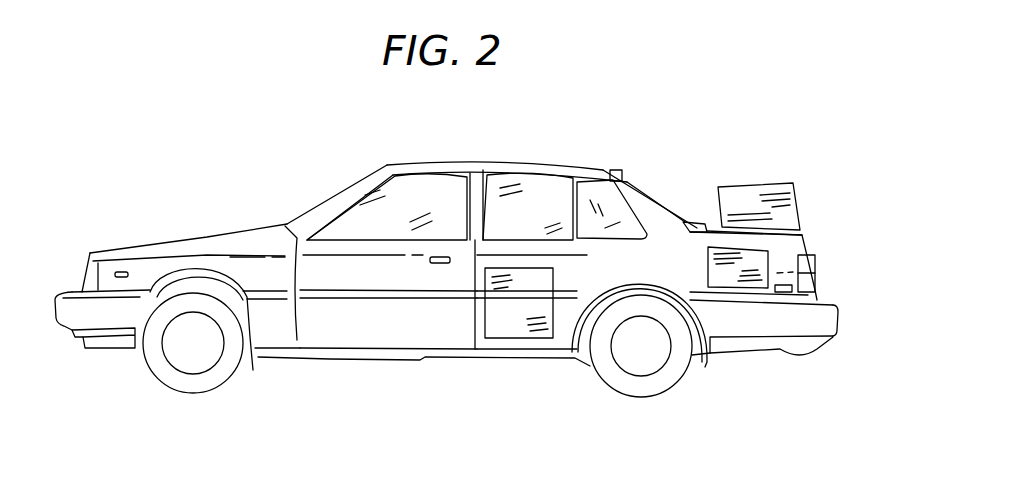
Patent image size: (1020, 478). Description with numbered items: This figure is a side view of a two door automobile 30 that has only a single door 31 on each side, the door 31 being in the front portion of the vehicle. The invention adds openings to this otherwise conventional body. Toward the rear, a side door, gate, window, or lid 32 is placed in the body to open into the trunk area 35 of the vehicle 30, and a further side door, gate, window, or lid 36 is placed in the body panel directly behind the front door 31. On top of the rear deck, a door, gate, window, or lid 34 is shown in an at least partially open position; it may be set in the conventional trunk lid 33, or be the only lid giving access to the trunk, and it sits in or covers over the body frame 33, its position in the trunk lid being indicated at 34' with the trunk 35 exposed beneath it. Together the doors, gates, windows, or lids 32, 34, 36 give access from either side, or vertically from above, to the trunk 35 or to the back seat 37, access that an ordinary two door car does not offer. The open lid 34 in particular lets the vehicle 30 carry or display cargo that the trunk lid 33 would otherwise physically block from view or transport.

The two door automobile 30 is at (322, 162).
The door 31 is at (440, 335).
The side door, gate, window, or lid 32 is at (757, 263).
The trunk lid 33 is at (803, 233).
The door, gate, window, or lid 34 is at (736, 181).
The trunk lid 34' is at (687, 200).
The trunk area 35 is at (827, 286).
The side door, gate, window, or lid 36 is at (500, 327).
The back seat 37 is at (577, 273).